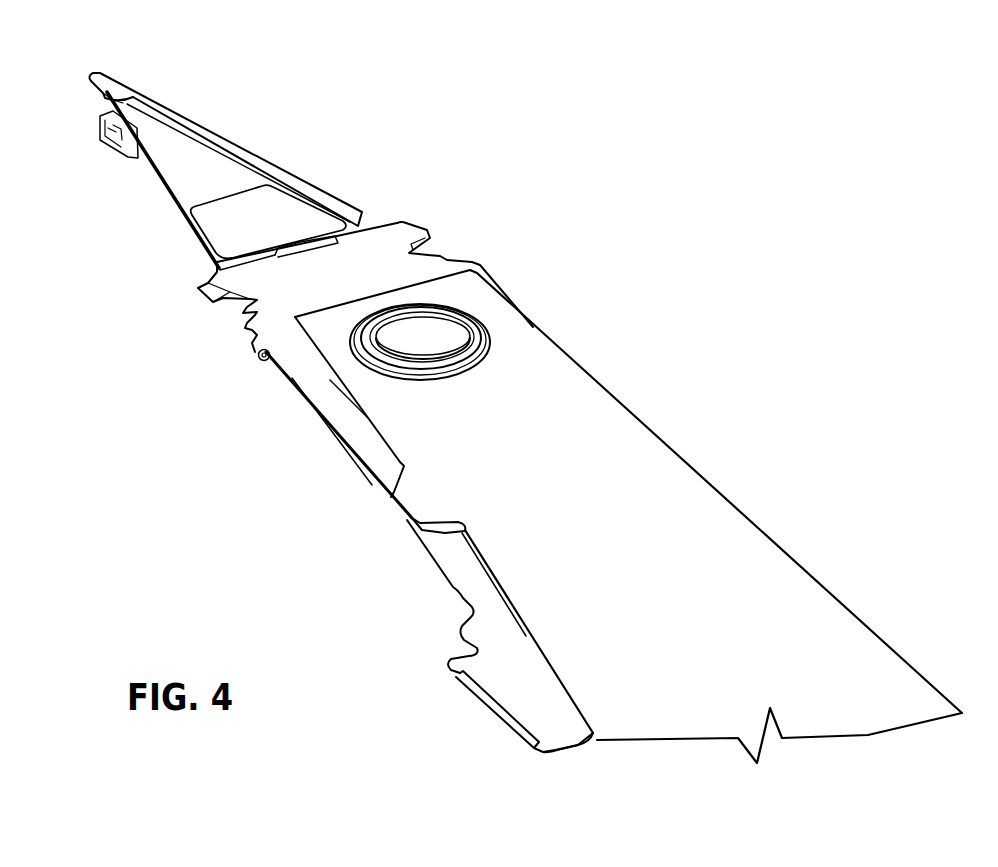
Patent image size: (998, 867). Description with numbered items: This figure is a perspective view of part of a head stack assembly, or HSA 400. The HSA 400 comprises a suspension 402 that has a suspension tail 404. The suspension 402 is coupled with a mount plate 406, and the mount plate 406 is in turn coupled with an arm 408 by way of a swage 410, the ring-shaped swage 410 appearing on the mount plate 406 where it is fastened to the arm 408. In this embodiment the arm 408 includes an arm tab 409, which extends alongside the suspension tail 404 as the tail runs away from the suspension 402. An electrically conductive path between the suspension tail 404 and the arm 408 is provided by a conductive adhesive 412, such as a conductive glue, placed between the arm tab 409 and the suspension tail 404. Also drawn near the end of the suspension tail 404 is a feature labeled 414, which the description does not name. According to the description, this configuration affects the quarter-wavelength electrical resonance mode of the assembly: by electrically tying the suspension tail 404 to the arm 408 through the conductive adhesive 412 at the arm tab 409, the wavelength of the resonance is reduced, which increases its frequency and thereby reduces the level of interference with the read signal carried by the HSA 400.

The head stack assembly 400 is at (284, 94).
The suspension 402 is at (223, 173).
The suspension tail 404 is at (562, 732).
The mount plate 406 is at (400, 233).
The arm 408 is at (658, 457).
The arm tab 409 is at (408, 497).
The swage 410 is at (493, 340).
The conductive adhesive 412 is at (443, 531).
The rail 414 is at (483, 708).